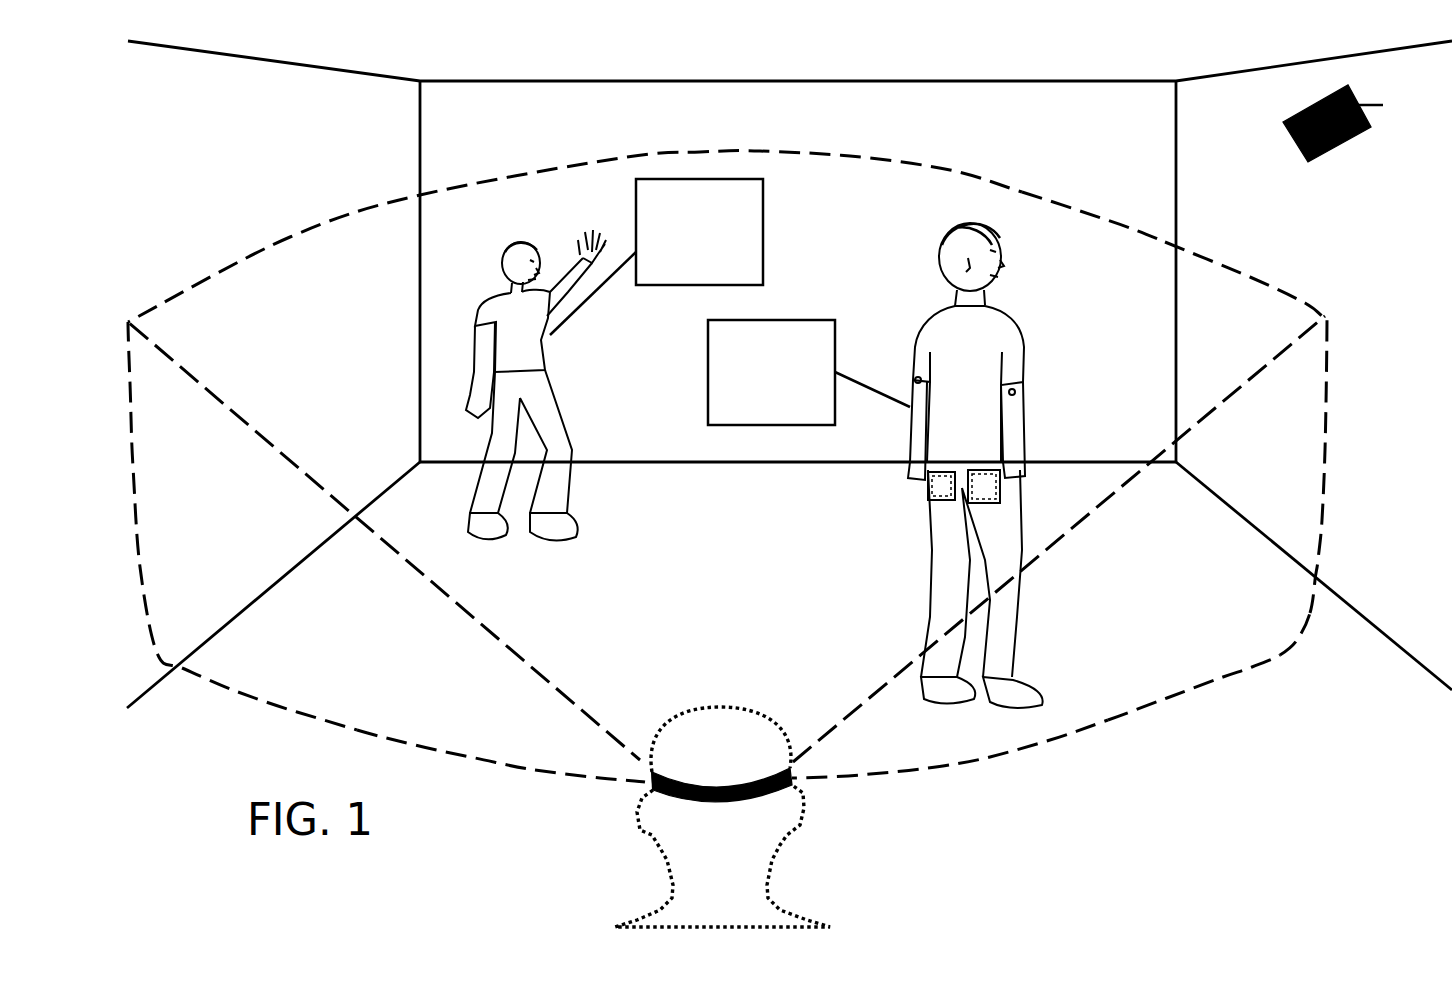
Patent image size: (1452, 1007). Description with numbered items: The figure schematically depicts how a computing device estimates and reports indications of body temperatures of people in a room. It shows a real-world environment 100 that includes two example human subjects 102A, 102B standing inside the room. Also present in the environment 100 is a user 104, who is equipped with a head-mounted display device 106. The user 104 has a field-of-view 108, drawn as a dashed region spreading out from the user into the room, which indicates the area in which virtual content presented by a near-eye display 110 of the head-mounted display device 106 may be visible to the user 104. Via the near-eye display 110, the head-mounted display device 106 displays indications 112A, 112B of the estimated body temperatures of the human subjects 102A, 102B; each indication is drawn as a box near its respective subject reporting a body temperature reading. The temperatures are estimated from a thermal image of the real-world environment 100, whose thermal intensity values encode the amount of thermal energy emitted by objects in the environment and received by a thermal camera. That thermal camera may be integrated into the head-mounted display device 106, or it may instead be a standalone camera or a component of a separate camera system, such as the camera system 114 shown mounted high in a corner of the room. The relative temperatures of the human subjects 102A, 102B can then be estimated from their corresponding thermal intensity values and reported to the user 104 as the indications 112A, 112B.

The real-world environment 100 is at (270, 106).
The human subject 102A is at (1002, 245).
The human subject 102B is at (547, 342).
The user 104 is at (722, 817).
The head-mounted display device 106 is at (812, 802).
The field-of-view 108 is at (286, 238).
The near-eye display 110 is at (652, 772).
The indication of estimated body temperature 112A is at (803, 320).
The indication of estimated body temperature 112B is at (763, 231).
The camera system 114 is at (1300, 153).